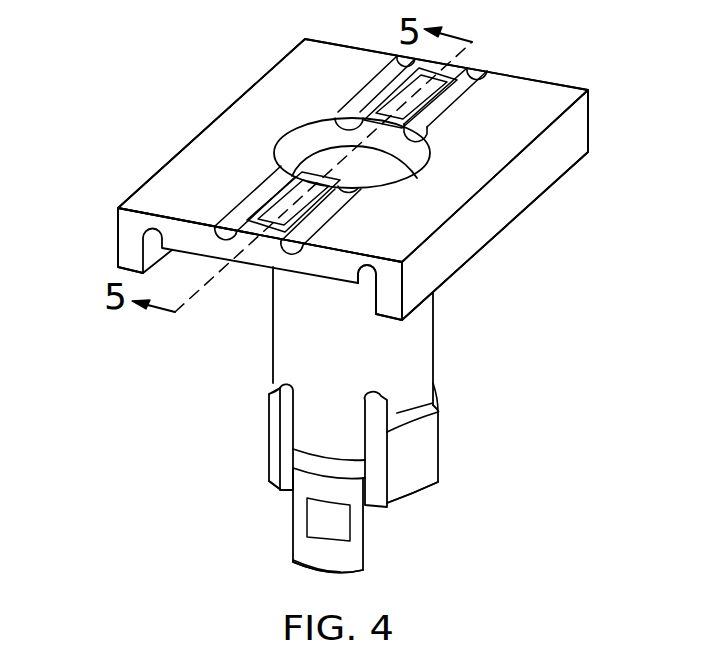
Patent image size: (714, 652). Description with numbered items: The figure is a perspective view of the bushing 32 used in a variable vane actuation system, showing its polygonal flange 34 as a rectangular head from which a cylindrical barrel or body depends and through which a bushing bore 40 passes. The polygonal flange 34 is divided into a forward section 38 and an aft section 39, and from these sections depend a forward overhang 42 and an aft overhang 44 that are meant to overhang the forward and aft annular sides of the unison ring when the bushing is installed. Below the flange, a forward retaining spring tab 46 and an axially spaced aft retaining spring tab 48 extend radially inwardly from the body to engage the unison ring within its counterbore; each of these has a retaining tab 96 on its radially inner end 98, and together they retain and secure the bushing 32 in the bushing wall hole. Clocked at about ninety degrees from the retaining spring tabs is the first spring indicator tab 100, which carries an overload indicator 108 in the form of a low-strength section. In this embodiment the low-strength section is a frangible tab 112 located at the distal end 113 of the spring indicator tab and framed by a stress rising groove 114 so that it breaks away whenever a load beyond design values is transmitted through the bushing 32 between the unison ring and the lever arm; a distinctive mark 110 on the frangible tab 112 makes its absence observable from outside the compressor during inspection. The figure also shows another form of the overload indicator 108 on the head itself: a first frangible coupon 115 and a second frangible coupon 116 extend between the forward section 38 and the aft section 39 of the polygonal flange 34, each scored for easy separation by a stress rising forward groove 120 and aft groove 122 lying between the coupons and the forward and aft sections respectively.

The bushing 32 is at (470, 476).
The polygonal flange 34 is at (546, 74).
The forward section 38 is at (183, 192).
The aft section 39 is at (440, 205).
The bushing bore 40 is at (314, 162).
The forward overhang 42 is at (118, 240).
The aft overhang 44 is at (426, 268).
The forward retaining spring tab 46 is at (273, 443).
The aft retaining spring tab 48 is at (397, 414).
The retaining tab 96 is at (270, 458).
The radially inner end 98 is at (268, 395).
The first spring indicator tab 100 is at (367, 533).
The overload indicator 108 is at (473, 77).
The distinctive mark 110 is at (410, 90).
The frangible tab 112 is at (365, 558).
The distal end 113 is at (315, 568).
The stress rising groove 114 is at (325, 467).
The first frangible coupon 115 is at (334, 189).
The second frangible coupon 116 is at (358, 124).
The forward groove 120 is at (248, 210).
The aft groove 122 is at (427, 123).